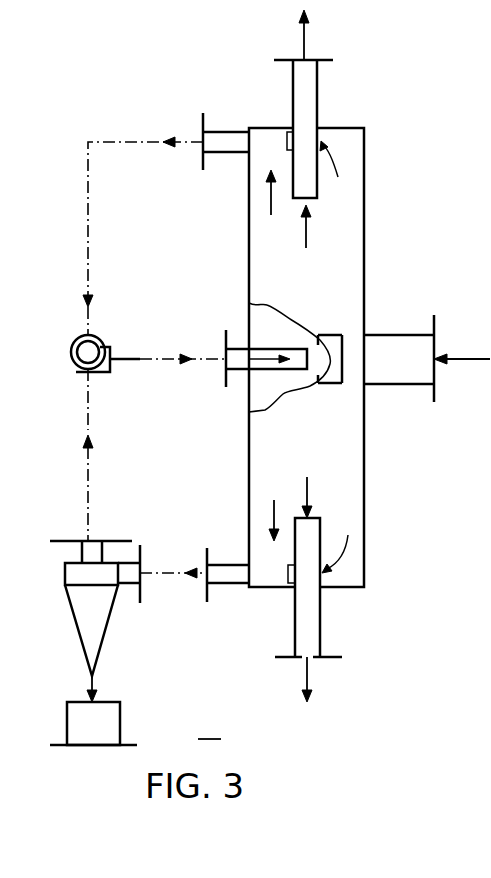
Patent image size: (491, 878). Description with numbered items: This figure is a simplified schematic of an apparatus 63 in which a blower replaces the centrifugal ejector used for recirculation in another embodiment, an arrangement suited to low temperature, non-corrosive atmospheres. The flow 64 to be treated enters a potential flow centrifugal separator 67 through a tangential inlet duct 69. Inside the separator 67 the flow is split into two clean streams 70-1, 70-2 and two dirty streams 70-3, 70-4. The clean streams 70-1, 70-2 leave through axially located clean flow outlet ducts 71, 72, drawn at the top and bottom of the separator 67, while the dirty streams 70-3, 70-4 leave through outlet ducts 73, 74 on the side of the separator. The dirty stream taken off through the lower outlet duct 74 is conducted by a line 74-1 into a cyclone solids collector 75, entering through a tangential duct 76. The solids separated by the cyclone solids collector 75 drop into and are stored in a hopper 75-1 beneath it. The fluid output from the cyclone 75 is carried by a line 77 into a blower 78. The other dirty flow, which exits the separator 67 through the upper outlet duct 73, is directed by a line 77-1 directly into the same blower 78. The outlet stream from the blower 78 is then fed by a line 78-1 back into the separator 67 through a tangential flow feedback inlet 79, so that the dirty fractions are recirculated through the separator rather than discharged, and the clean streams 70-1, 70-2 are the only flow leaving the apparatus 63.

The apparatus 63 is at (209, 730).
The flow to be treated 64 is at (462, 357).
The potential flow centrifugal separator 67 is at (336, 240).
The tangential inlet duct 69 is at (397, 340).
The clean stream 70-1 is at (304, 42).
The clean stream 70-2 is at (307, 490).
The dirty stream 70-3 is at (271, 195).
The dirty stream 70-4 is at (274, 525).
The clean flow outlet duct 71 is at (318, 98).
The clean flow outlet duct 72 is at (320, 628).
The outlet duct 73 is at (228, 131).
The outlet duct 74 is at (232, 590).
The line 74-1 is at (155, 566).
The cyclone solids collector 75 is at (82, 640).
The hopper 75-1 is at (113, 716).
The tangential duct 76 is at (127, 592).
The line 77 is at (88, 456).
The line 77-1 is at (88, 232).
The blower 78 is at (76, 369).
The line 78-1 is at (128, 361).
The tangential flow feedback inlet 79 is at (240, 340).